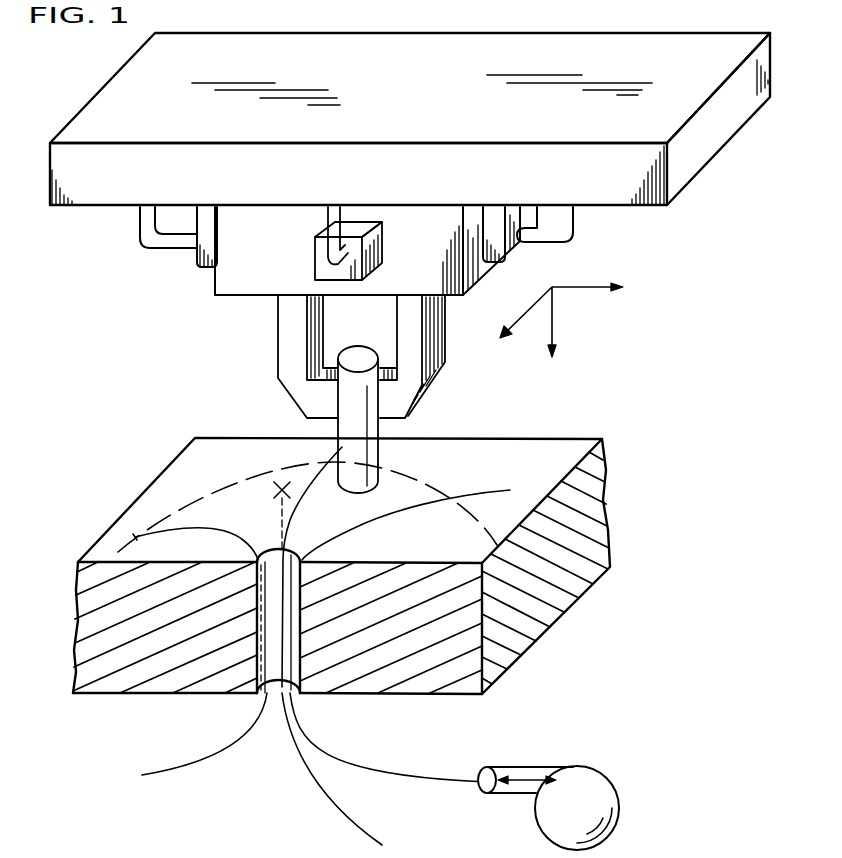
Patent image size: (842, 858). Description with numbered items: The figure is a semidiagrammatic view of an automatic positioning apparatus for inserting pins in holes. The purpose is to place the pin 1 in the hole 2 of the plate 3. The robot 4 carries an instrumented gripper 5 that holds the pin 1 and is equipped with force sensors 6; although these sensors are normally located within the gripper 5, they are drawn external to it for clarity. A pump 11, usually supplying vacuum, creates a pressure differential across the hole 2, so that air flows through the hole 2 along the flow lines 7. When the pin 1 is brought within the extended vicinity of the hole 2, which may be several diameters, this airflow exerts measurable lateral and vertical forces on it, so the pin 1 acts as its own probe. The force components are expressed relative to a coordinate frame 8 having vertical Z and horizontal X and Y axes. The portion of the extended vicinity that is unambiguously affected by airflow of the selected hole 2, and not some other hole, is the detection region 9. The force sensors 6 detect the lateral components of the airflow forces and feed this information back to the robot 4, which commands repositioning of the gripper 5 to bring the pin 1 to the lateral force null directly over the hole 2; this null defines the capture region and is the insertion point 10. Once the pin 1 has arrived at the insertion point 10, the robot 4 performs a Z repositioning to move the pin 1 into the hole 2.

The pin 1 is at (372, 458).
The hole 2 is at (258, 652).
The plate 3 is at (565, 443).
The robot 4 is at (705, 155).
The instrumented gripper 5 is at (440, 348).
The force sensors 6 is at (380, 245).
The flow lines 7 is at (368, 520).
The coordinate frame 8 is at (552, 312).
The detection region 9 is at (413, 490).
The insertion point 10 is at (273, 492).
The pump 11 is at (592, 790).